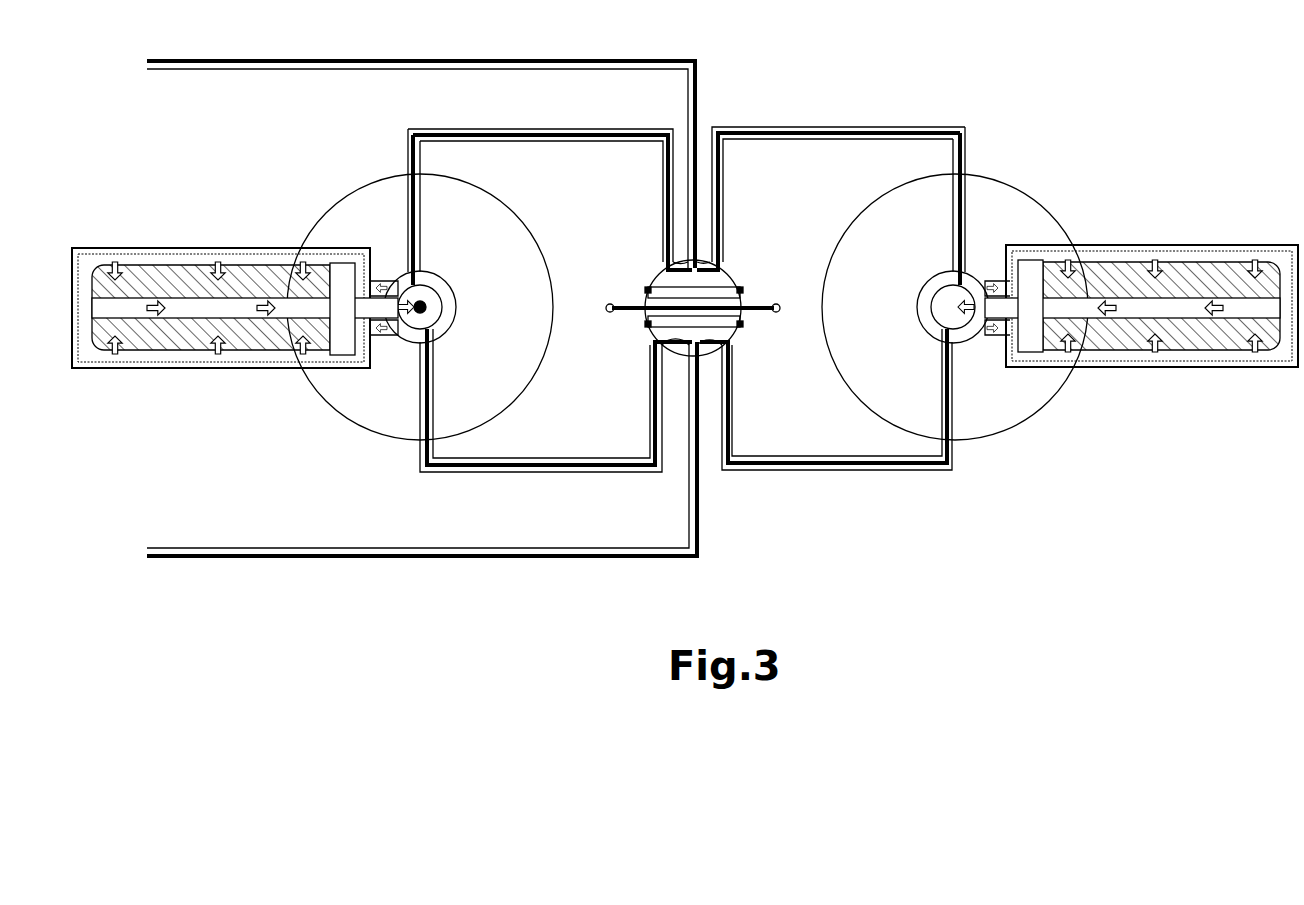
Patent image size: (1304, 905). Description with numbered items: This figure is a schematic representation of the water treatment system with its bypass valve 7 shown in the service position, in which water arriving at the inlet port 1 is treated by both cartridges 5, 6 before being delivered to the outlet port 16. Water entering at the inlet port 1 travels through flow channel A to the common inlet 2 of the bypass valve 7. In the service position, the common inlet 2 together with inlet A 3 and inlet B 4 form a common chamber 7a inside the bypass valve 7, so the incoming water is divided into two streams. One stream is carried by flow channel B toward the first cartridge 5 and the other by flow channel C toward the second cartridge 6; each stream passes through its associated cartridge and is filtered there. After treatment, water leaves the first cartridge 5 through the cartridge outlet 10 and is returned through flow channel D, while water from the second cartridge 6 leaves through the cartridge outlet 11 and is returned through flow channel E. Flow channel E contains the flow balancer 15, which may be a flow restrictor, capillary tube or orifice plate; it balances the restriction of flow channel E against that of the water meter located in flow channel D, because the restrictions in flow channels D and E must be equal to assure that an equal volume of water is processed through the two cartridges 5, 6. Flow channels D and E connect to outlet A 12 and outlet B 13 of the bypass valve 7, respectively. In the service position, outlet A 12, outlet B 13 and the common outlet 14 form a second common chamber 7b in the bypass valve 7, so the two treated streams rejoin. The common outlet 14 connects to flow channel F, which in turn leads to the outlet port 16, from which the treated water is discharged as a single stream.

The inlet port 1 is at (150, 52).
The common inlet 2 is at (699, 262).
The inlet A 3 is at (670, 272).
The inlet B 4 is at (722, 265).
The cartridge 5 is at (207, 240).
The cartridge 6 is at (1173, 240).
The bypass valve 7 is at (687, 303).
The common chamber 7a is at (676, 283).
The common chamber 7b is at (705, 340).
The cartridge outlet 10 is at (438, 310).
The cartridge outlet 11 is at (938, 322).
The outlet A 12 is at (652, 328).
The outlet B 13 is at (740, 337).
The common outlet 14 is at (703, 400).
The flow balancer 15 is at (826, 429).
The outlet port 16 is at (154, 540).
The flow channel A is at (560, 58).
The flow channel B is at (540, 133).
The flow channel C is at (834, 133).
The flow channel D is at (515, 470).
The flow channel E is at (776, 470).
The flow channel F is at (545, 560).